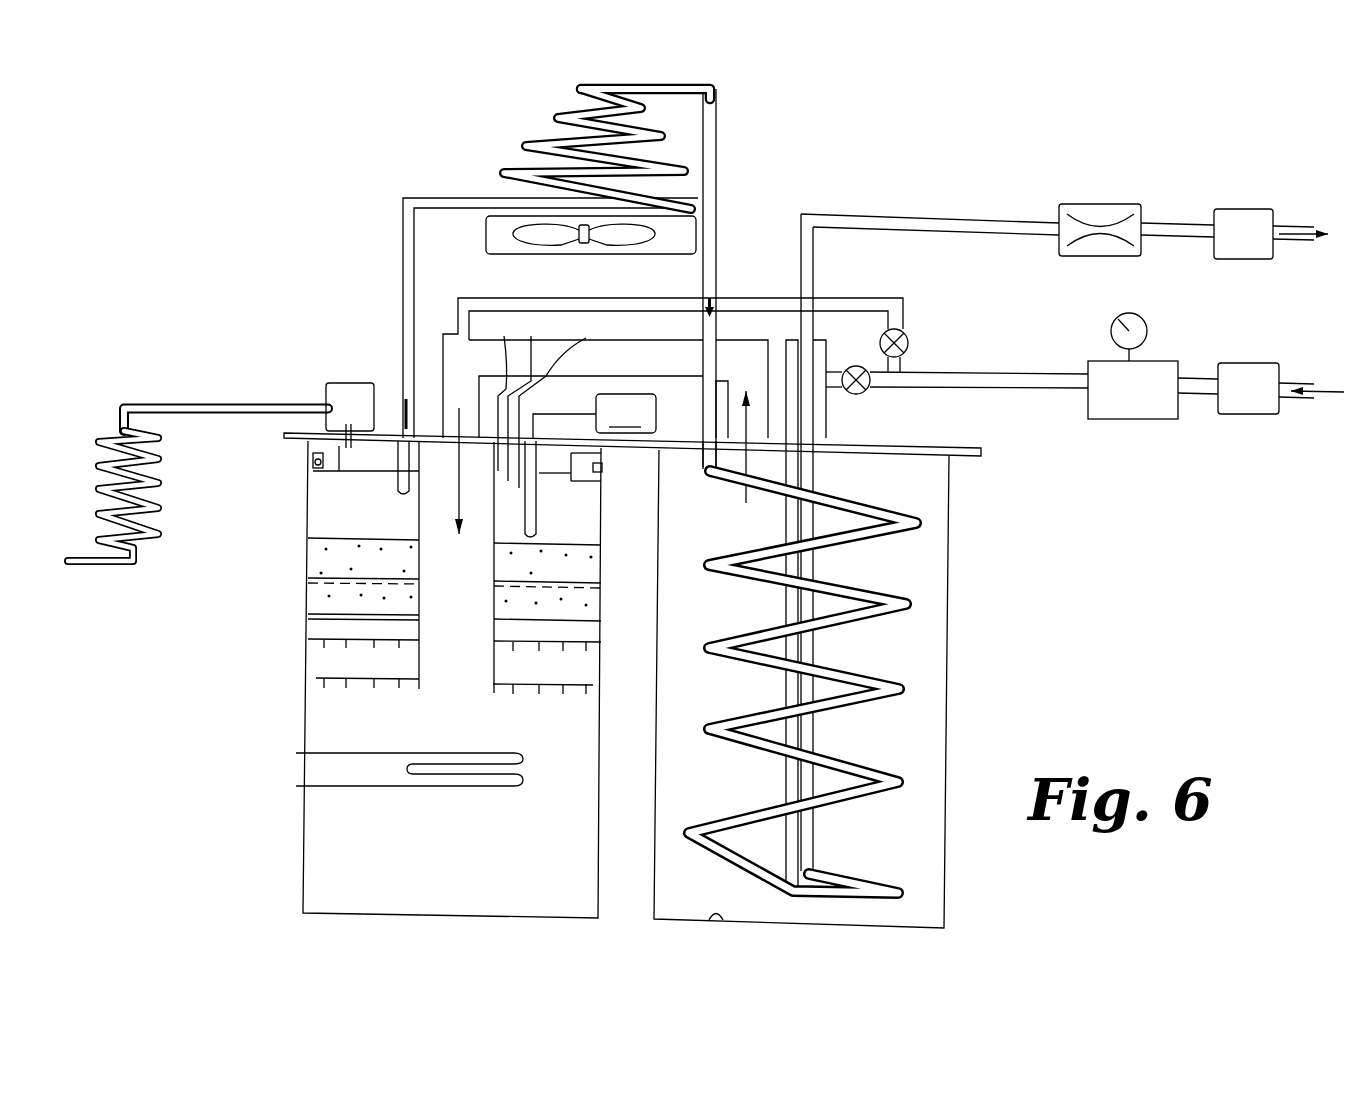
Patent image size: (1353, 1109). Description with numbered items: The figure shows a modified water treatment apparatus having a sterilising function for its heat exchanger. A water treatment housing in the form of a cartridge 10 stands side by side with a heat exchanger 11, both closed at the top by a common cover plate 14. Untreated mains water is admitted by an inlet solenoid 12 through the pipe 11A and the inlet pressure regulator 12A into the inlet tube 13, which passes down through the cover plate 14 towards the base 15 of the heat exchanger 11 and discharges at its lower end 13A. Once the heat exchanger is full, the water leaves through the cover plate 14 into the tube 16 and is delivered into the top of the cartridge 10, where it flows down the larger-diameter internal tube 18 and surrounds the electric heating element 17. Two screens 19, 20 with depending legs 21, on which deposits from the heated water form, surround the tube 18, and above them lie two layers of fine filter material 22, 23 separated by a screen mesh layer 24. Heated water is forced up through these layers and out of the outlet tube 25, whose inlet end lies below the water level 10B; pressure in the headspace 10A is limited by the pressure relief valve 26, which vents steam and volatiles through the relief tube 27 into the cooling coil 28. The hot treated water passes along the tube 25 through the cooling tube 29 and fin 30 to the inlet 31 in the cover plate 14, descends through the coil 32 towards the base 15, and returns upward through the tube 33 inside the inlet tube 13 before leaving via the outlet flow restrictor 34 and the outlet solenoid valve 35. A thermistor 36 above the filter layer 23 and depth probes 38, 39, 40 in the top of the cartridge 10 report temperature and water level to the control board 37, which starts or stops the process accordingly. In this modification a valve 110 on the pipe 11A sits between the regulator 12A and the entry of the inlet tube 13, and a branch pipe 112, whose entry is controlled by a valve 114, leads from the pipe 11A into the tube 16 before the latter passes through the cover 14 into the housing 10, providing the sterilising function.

The cartridge 10 is at (457, 912).
The headspace 10A is at (383, 452).
The water level 10B is at (365, 470).
The heat exchanger 11 is at (876, 927).
The pipe 11A is at (1040, 395).
The inlet solenoid 12 is at (1255, 362).
The inlet pressure regulator 12A is at (1150, 360).
The inlet tube 13 is at (822, 650).
The lower end of inlet tube 13A is at (780, 847).
The cover plate 14 is at (920, 455).
The base 15 is at (720, 920).
The tube 16 is at (745, 348).
The electric heating element 17 is at (382, 785).
The internal tube 18 is at (420, 640).
The screen 19 is at (322, 688).
The screen 20 is at (333, 637).
The depending legs 21 is at (343, 648).
The filter layer 22 is at (310, 594).
The filter layer 23 is at (595, 570).
The screen mesh layer 24 is at (310, 570).
The outlet tube 25 is at (718, 203).
The pressure relief valve 26 is at (330, 398).
The relief tube 27 is at (180, 400).
The cooling coil 28 is at (150, 495).
The cooling tube 29 is at (517, 170).
The fin 30 is at (622, 238).
The inlet 31 is at (700, 462).
The coil 32 is at (870, 700).
The tube 33 is at (810, 790).
The outlet flow restrictor 34 is at (1140, 212).
The outlet solenoid valve 35 is at (1272, 218).
The thermistor 36 is at (540, 525).
The control board 37 is at (594, 416).
The depth probe 38 is at (509, 390).
The depth probe 39 is at (539, 395).
The depth probe 40 is at (570, 399).
The valve 110 is at (870, 386).
The branch pipe 112 is at (876, 303).
The valve 114 is at (910, 342).